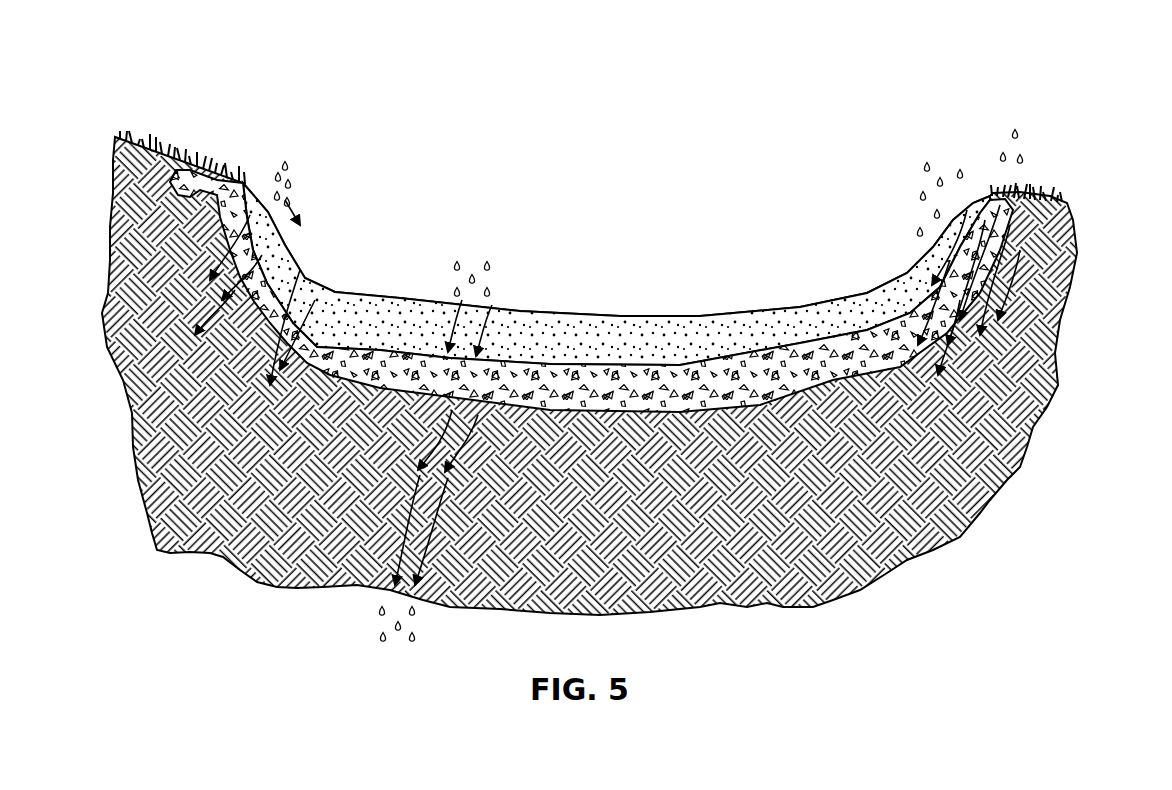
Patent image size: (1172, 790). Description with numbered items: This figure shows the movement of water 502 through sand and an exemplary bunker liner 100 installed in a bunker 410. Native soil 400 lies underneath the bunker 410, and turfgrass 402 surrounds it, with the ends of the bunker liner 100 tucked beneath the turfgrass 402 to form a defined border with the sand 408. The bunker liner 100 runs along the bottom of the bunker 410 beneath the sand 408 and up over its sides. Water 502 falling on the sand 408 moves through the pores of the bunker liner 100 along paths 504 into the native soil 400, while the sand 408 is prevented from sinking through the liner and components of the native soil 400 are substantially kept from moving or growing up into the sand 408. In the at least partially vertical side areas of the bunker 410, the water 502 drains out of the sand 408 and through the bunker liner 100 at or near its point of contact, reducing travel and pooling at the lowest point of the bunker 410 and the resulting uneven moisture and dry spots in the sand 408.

The bunker liner 100 is at (524, 403).
The native soil 400 is at (913, 525).
The turfgrass 402 is at (167, 132).
The sand 408 is at (705, 332).
The bunker 410 is at (468, 214).
The water 502 is at (288, 166).
The paths 504 is at (247, 297).